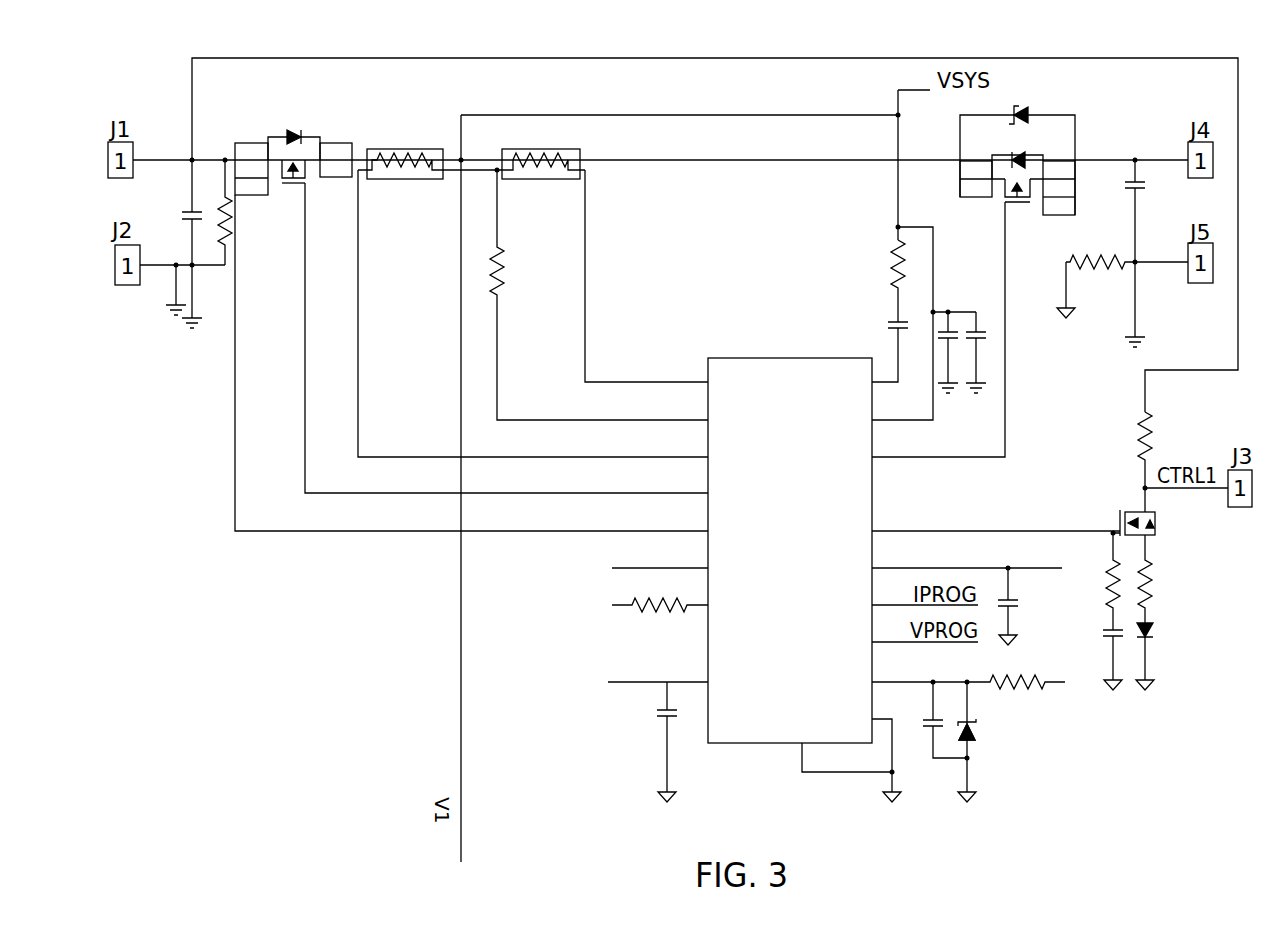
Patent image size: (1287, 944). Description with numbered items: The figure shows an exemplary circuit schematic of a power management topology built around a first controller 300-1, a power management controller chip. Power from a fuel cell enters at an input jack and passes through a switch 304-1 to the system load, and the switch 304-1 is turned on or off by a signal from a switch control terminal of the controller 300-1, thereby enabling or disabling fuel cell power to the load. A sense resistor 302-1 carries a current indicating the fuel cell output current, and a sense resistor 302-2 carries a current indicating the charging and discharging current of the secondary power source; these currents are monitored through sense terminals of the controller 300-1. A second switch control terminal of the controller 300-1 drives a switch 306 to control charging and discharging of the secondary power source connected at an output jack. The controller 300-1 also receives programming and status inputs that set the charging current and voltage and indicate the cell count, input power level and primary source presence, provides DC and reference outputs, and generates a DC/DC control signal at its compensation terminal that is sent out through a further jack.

The switch 304-1 is at (275, 136).
The sense resistor 302-1 is at (418, 180).
The sense resistor 302-2 is at (557, 180).
The switch 306 is at (1075, 120).
The first controller 300-1 is at (738, 744).